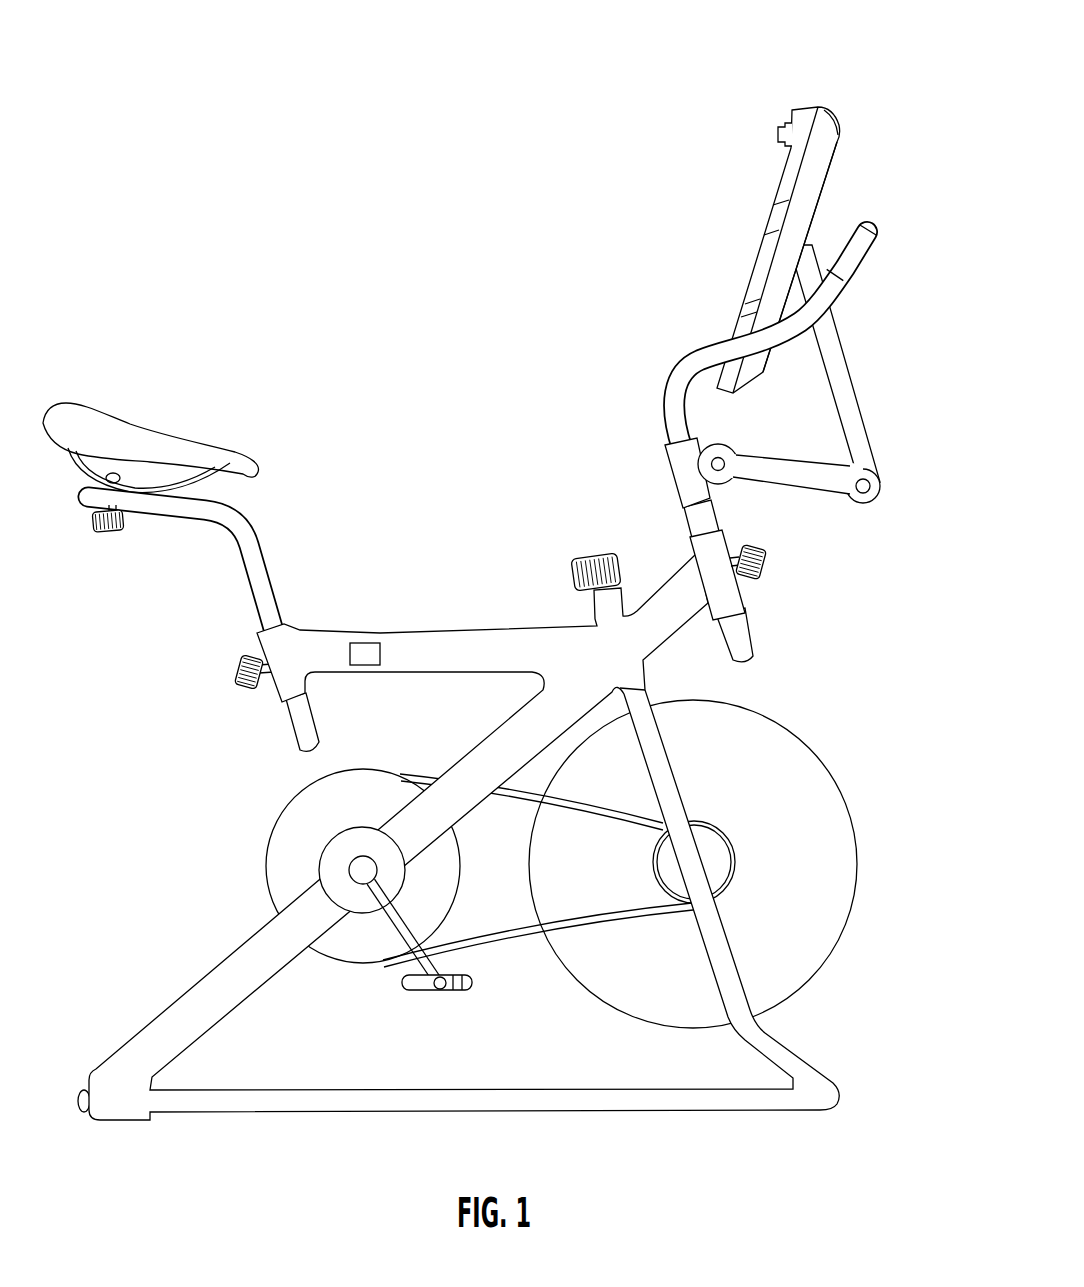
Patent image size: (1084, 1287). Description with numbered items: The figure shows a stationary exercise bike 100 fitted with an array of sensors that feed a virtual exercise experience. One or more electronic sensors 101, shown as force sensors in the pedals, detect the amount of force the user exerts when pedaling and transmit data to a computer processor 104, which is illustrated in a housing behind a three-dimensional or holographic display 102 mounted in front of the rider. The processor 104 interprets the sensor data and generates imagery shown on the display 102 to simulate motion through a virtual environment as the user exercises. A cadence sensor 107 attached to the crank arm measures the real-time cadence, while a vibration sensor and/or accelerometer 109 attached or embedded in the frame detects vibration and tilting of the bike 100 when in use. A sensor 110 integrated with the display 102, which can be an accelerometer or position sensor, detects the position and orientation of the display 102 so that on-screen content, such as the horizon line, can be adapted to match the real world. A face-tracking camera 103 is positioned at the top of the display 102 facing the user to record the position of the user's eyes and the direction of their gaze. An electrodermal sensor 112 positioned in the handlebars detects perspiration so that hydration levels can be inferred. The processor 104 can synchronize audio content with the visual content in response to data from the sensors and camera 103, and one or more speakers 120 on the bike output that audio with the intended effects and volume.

The stationary exercise bike 100 is at (879, 42).
The electronic sensor 101 is at (455, 992).
The 3D or holographic display 102 is at (736, 262).
The face-tracking camera 103 is at (768, 130).
The computer processor 104 is at (817, 190).
The cadence sensor 107 is at (372, 913).
The vibration sensor and/or accelerometer 109 is at (366, 641).
The sensor 110 is at (743, 308).
The electrodermal sensor 112 is at (845, 274).
The speaker 120 is at (772, 218).